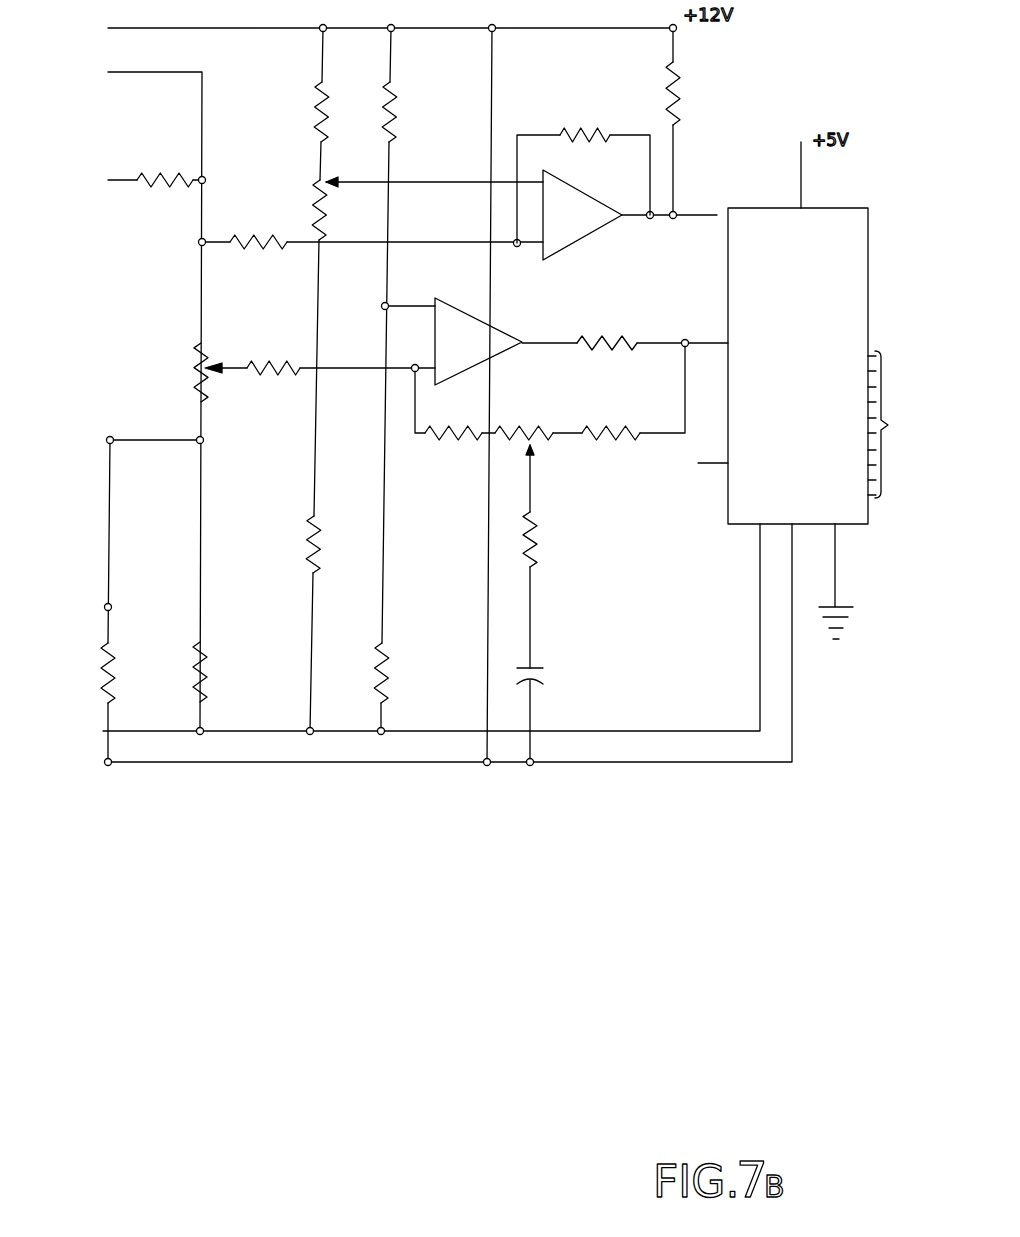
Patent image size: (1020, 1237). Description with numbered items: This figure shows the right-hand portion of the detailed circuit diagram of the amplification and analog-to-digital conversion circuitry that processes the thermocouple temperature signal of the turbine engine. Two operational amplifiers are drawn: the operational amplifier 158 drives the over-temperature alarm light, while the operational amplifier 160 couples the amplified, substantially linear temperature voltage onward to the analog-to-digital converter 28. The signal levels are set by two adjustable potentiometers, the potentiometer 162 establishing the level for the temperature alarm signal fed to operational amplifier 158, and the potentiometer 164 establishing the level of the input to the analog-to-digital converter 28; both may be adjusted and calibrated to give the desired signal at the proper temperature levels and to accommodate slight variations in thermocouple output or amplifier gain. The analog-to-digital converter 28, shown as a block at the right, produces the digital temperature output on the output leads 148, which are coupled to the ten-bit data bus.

The operational amplifier 158 is at (563, 192).
The operational amplifier 160 is at (483, 338).
The potentiometer 162 is at (317, 208).
The potentiometer 164 is at (203, 359).
The analog-to-digital converter 28 is at (822, 218).
The output leads 148 is at (888, 425).